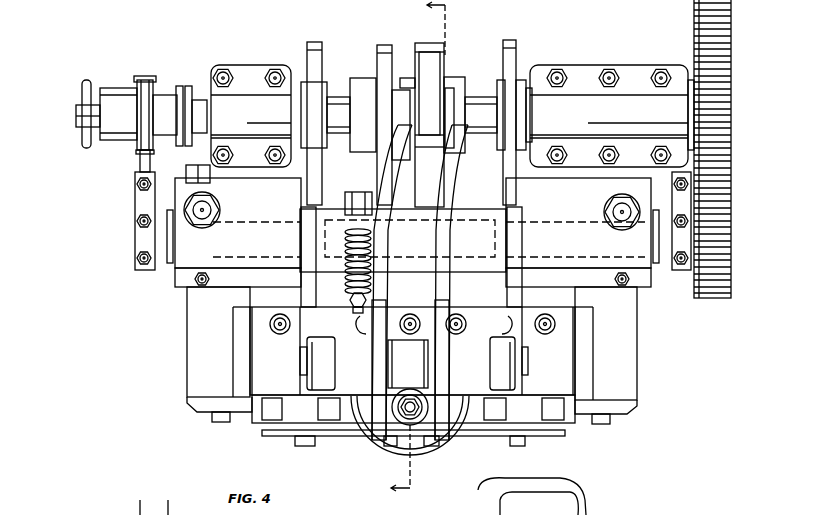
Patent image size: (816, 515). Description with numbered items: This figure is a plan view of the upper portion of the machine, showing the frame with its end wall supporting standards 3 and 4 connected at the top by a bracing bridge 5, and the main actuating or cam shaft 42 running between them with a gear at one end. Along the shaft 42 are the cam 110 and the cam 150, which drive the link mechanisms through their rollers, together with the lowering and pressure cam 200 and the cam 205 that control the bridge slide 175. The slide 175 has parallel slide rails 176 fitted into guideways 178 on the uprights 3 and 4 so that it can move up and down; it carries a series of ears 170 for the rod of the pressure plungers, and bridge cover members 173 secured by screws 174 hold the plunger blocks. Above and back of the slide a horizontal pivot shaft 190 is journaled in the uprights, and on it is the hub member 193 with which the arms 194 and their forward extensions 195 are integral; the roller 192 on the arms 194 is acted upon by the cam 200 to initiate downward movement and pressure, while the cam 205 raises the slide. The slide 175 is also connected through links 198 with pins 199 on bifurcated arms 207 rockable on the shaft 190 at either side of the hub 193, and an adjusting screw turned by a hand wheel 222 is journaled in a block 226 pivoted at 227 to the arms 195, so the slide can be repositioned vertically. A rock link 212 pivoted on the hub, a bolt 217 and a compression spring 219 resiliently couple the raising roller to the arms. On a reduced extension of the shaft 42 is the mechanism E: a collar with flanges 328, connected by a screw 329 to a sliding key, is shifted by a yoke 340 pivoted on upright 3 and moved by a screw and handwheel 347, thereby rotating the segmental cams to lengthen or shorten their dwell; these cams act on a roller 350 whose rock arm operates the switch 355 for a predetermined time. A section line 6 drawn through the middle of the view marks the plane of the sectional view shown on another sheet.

The end wall supporting standard 3 is at (175, 289).
The end wall supporting standard 4 is at (643, 288).
The bracing bridge 5 is at (413, 223).
The section line 6- 6 is at (411, 248).
The main actuating or cam shaft 42 is at (76, 114).
The cam 110 is at (315, 42).
The cam 150 is at (505, 50).
The ears 170 is at (258, 421).
The bridge cover members 173 is at (320, 438).
The screws 174 is at (298, 447).
The bridge slide 175 is at (412, 351).
The slide rails 176 is at (241, 326).
The guideways 178 is at (191, 410).
The horizontal pivot shaft 190 is at (165, 238).
The roller 192 is at (429, 93).
The hub member 193 is at (403, 240).
The arms 194 is at (398, 176).
The forward extensions 195 is at (436, 290).
The links 198 is at (318, 384).
The pins 199 is at (300, 366).
The lowering and pressure cam 200 is at (435, 31).
The cam 205 is at (385, 45).
The bifurcated arms 207 is at (304, 299).
The rock link 212 is at (352, 190).
The bolt 217 is at (357, 308).
The compression spring 219 is at (346, 282).
The hand wheel 222 is at (430, 462).
The block 226 is at (408, 364).
The pivot 227 is at (372, 442).
The flanges 328 is at (118, 114).
The screw 329 is at (198, 83).
The yoke 340 is at (138, 160).
The handwheel 347 is at (80, 90).
The roller 350 is at (184, 174).
The switch 355 is at (205, 193).
The mechanism E is at (161, 97).